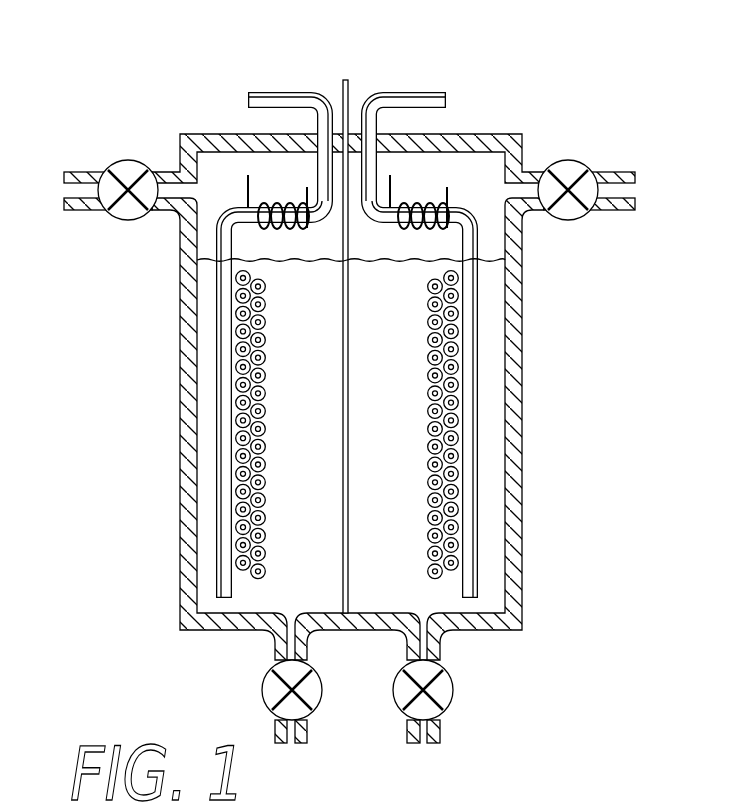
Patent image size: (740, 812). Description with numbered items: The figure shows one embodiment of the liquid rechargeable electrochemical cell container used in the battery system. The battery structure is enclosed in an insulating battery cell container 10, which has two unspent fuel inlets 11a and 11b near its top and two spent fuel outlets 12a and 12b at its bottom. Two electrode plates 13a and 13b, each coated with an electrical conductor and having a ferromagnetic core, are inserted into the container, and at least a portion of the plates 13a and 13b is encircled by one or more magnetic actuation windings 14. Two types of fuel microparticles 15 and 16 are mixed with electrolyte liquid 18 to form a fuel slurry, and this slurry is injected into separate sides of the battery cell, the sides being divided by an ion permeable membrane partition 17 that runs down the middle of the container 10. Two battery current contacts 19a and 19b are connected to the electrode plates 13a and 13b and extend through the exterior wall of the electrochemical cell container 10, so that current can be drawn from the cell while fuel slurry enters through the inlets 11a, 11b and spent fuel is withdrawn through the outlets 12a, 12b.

The insulating battery cell container 10 is at (183, 283).
The unspent fuel inlet 11a is at (83, 172).
The unspent fuel inlet 11b is at (618, 172).
The spent fuel outlet 12a is at (273, 688).
The spent fuel outlet 12b is at (445, 691).
The electrode plate 13a is at (223, 361).
The electrode plate 13b is at (467, 285).
The magnetic actuation winding 14 is at (390, 183).
The fuel microparticles 15 is at (237, 385).
The fuel microparticles 16 is at (453, 363).
The ion permeable membrane partition 17 is at (350, 497).
The electrolyte liquid 18 is at (495, 575).
The battery current contact 19a is at (277, 92).
The battery current contact 19b is at (420, 92).